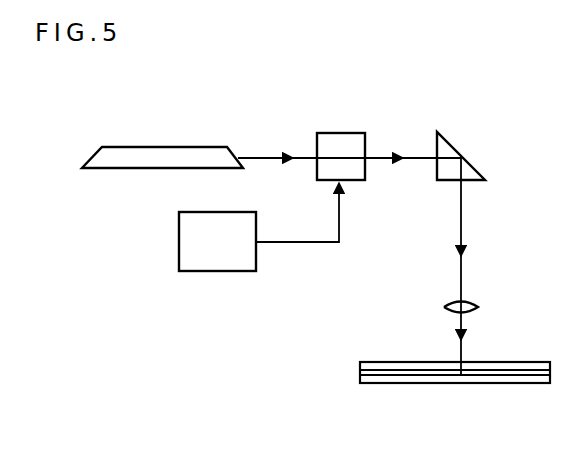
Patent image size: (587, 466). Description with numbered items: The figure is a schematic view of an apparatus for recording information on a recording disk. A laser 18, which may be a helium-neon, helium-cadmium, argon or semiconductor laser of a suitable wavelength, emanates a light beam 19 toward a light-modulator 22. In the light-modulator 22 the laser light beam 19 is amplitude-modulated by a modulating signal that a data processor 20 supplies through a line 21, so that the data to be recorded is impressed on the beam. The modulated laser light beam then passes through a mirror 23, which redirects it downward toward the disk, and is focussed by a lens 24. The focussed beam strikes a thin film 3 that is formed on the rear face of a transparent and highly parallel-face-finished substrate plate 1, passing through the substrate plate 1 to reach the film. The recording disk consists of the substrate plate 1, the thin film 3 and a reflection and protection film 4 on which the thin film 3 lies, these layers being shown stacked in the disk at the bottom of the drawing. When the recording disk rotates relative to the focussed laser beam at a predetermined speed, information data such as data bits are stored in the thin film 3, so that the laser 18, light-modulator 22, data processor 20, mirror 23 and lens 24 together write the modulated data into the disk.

The substrate plate 1 is at (483, 367).
The thin film 3 is at (525, 375).
The reflection and protection film 4 is at (475, 380).
The laser 18 is at (160, 158).
The light beam 19 is at (264, 157).
The data processor 20 is at (208, 255).
The line 21 is at (313, 245).
The light-modulator 22 is at (345, 145).
The mirror 23 is at (445, 150).
The lens 24 is at (472, 300).